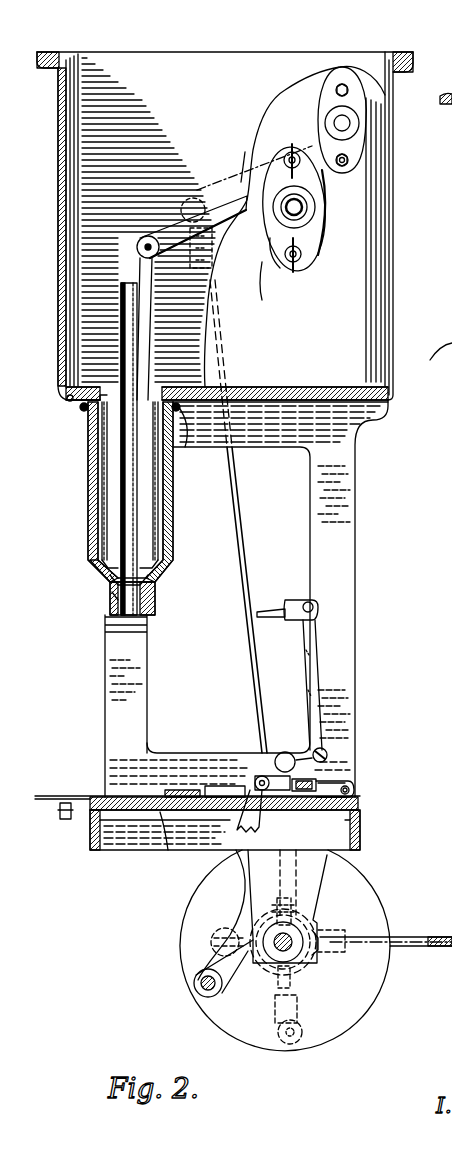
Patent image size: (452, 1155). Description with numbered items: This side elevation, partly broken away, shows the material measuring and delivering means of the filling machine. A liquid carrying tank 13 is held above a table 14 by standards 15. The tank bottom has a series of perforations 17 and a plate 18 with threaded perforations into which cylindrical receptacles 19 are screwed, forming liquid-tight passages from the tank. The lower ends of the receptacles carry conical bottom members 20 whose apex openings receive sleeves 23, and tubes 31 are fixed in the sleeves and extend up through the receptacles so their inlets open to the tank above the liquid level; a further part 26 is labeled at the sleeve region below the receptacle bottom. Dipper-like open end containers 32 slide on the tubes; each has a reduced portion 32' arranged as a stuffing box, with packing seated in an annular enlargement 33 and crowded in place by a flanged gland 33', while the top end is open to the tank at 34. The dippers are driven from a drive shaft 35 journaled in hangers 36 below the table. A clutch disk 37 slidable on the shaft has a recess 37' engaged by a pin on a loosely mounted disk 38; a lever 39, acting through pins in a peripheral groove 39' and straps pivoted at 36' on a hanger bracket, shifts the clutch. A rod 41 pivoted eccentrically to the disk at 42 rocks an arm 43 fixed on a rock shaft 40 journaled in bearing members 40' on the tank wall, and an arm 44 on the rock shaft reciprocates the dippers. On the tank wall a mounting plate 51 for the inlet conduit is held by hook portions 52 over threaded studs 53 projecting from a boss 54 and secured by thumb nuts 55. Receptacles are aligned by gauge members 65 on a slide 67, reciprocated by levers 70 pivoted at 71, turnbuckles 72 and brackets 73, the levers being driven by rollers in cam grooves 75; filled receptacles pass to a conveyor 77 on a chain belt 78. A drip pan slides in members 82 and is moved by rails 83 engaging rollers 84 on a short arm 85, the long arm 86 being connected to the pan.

The liquid carrying tank 13 is at (226, 72).
The table 14 is at (134, 840).
The standards 15 is at (312, 504).
The perforations 17 is at (70, 399).
The plate 18 is at (80, 408).
The cylindrical receptacles 19 is at (92, 521).
The conical bottom members 20 is at (160, 579).
The sleeves 23 is at (156, 600).
The packing 26 is at (112, 592).
The tubes 31 is at (142, 502).
The cylindrical open end containers 32 is at (100, 481).
The reduced portion 32' is at (277, 455).
The annular enlargement 33 is at (81, 573).
The flanged gland 33' is at (164, 570).
The open top end 34 is at (112, 396).
The drive shaft 35 is at (272, 960).
The hangers 36 is at (298, 915).
The bracket pivot 36' is at (182, 939).
The clutch disk 37 is at (366, 915).
The recess 37' is at (339, 954).
The disk 38 is at (345, 1004).
The lever 39 is at (386, 925).
The peripheral groove 39' is at (300, 962).
The rock shaft 40 is at (371, 120).
The bearing members 40' is at (386, 161).
The rod 41 is at (252, 665).
The eccentric pivot 42 is at (291, 1037).
The arm 43 is at (206, 188).
The arm 44 is at (192, 196).
The mounting plate 51 is at (312, 230).
The hook portions 52 is at (303, 150).
The threaded studs 53 is at (303, 262).
The boss 54 is at (272, 268).
The thumb nuts 55 is at (300, 161).
The gauge members 65 is at (166, 790).
The slide 67 is at (196, 790).
The levers 70 is at (262, 824).
The lever pivot stud 71 is at (198, 993).
The turnbuckles 72 is at (320, 781).
The brackets 73 is at (352, 790).
The cam grooves 75 is at (167, 806).
The conveyor 77 is at (46, 797).
The chain belt 78 is at (66, 822).
The slideway members 82 is at (108, 640).
The rails 83 is at (302, 775).
The rollers 84 is at (285, 752).
The short arm 85 is at (298, 750).
The long arm 86 is at (306, 651).